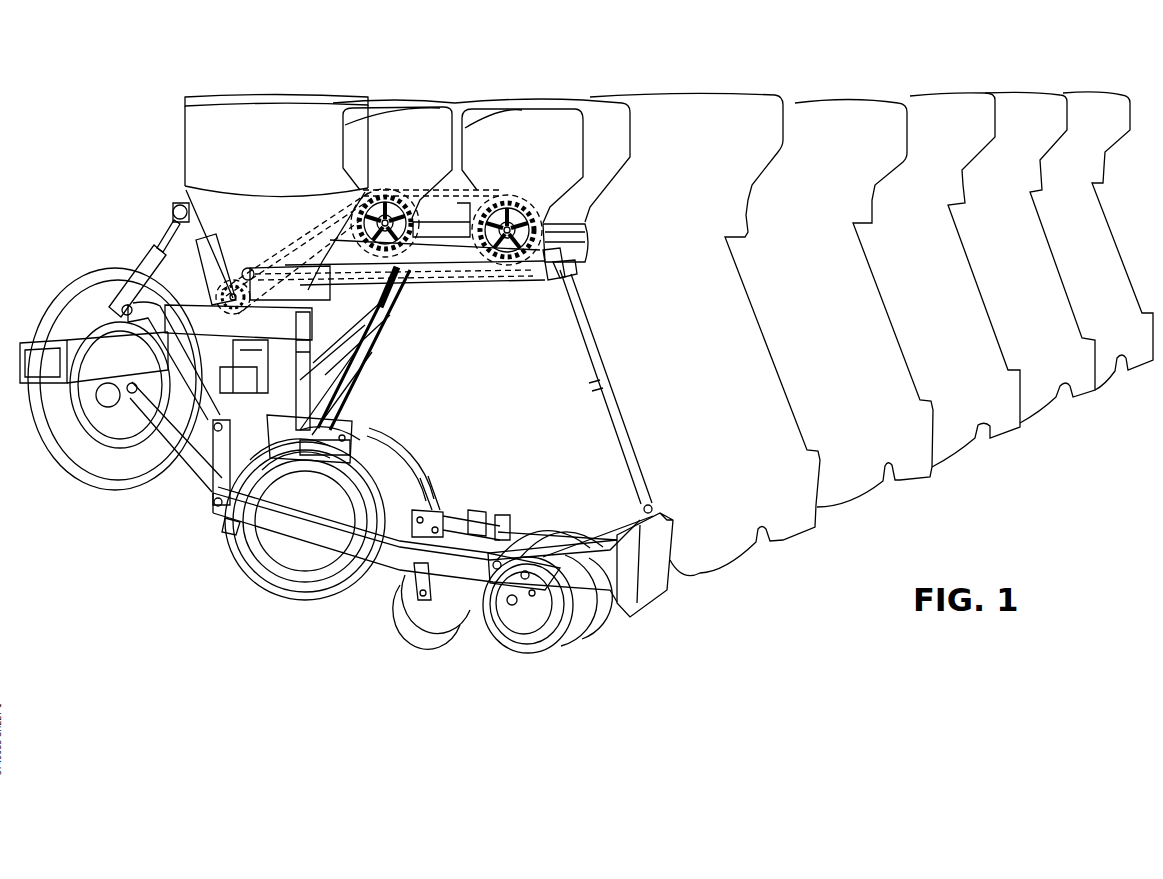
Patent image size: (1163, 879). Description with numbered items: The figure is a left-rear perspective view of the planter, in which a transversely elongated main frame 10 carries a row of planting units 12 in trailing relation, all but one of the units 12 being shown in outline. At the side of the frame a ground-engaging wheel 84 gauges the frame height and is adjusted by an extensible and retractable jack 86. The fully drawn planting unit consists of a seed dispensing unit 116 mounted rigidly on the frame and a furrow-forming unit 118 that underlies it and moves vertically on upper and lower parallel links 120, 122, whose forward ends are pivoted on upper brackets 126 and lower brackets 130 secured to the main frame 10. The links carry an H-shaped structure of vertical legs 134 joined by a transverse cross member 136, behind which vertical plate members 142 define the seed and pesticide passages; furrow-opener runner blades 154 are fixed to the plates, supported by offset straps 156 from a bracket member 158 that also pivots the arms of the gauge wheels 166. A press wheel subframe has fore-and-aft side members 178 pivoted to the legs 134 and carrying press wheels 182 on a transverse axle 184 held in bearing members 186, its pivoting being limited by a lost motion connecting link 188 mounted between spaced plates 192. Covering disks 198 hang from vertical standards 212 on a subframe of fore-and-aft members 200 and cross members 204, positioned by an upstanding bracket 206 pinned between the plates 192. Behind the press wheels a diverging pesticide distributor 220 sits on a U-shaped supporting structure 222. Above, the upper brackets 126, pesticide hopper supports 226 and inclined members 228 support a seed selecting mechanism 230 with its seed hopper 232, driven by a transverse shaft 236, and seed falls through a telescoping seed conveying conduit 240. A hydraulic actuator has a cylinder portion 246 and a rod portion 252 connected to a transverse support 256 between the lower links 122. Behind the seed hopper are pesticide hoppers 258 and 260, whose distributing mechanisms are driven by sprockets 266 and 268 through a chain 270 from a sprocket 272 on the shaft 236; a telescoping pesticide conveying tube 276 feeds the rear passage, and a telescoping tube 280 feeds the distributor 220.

The main frame 10 is at (48, 342).
The planting units 12 is at (650, 624).
The ground-engaging wheel 84 is at (76, 292).
The extensible and retractable jack 86 is at (150, 260).
The seed dispensing unit 116 is at (478, 78).
The furrow-forming unit 118 is at (530, 664).
The upper parallel links 120 is at (163, 333).
The lower parallel links 122 is at (128, 398).
The upper brackets 126 is at (332, 322).
The lower brackets 130 is at (117, 380).
The vertical legs 134 is at (210, 505).
The transverse cross member 136 is at (208, 470).
The vertical plate members 142 is at (350, 433).
The furrow-opener runner blades 154 is at (232, 547).
The offset straps 156 is at (225, 526).
The bracket member 158 is at (272, 480).
The gauge wheels 166 is at (353, 580).
The fore-and-aft side members 178 is at (297, 532).
The press wheels 182 is at (573, 636).
The transverse axle 184 is at (540, 596).
The bearing members 186 is at (510, 618).
The lost motion connecting link 188 is at (372, 466).
The spaced plates 192 is at (432, 478).
The disks 198 is at (446, 614).
The fore-and-aft members 200 is at (503, 527).
The cross members 204 is at (473, 512).
The upstanding bracket 206 is at (450, 506).
The vertical standard 212 is at (420, 588).
The diverging pesticide distributor 220 is at (667, 594).
The U-shaped supporting structure 222 is at (600, 545).
The pesticide hopper supports 226 is at (551, 268).
The inclined members 228 is at (386, 312).
The seed selecting mechanism 230 is at (272, 283).
The seed hopper 232 is at (262, 112).
The transverse shaft 236 is at (222, 310).
The telescoping seed conveying conduit 240 is at (352, 368).
The cylinder portion 246 is at (218, 252).
The rod portion 252 is at (233, 352).
The transverse support 256 is at (282, 418).
The forward pesticide hopper 258 is at (398, 118).
The rear pesticide hopper 260 is at (517, 125).
The sprocket 266 is at (398, 198).
The sprocket 268 is at (518, 206).
The chain 270 is at (440, 282).
The sprocket 272 is at (245, 268).
The telescoping pesticide conveying tube 276 is at (376, 342).
The telescoping tube 280 is at (597, 370).